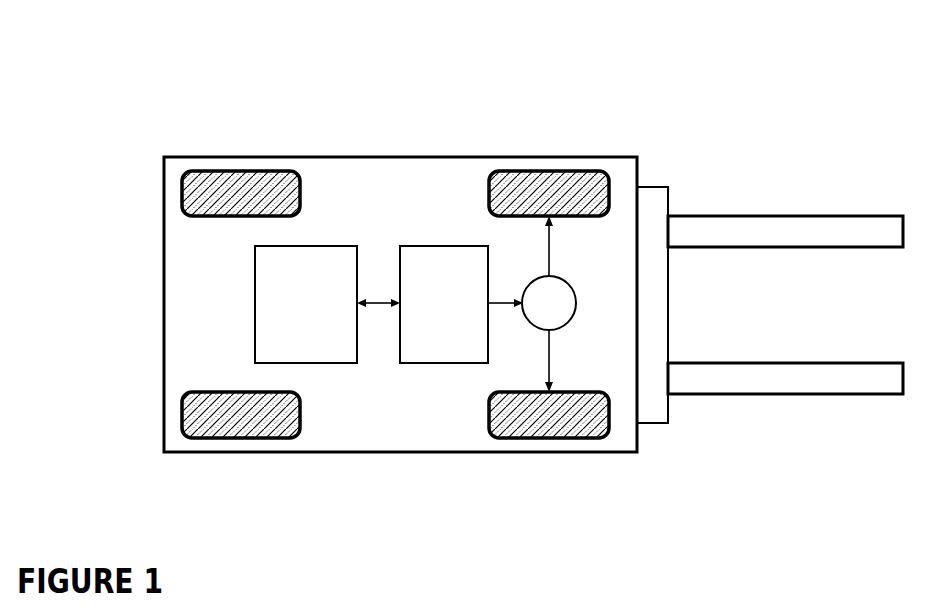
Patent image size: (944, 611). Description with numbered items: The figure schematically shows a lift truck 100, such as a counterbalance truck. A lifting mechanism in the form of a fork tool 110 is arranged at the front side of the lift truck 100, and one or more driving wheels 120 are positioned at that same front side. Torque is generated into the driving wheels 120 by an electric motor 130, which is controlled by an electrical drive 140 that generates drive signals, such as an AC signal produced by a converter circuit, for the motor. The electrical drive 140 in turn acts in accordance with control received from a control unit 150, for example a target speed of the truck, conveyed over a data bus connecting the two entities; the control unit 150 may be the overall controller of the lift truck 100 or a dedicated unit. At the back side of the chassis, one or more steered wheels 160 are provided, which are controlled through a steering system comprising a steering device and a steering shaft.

The lift truck 100 is at (155, 70).
The fork tool 110 is at (777, 215).
The driving wheels 120 is at (570, 177).
The electric motor 130 is at (560, 278).
The electrical drive 140 is at (433, 246).
The control unit 150 is at (257, 297).
The steered wheels 160 is at (255, 184).